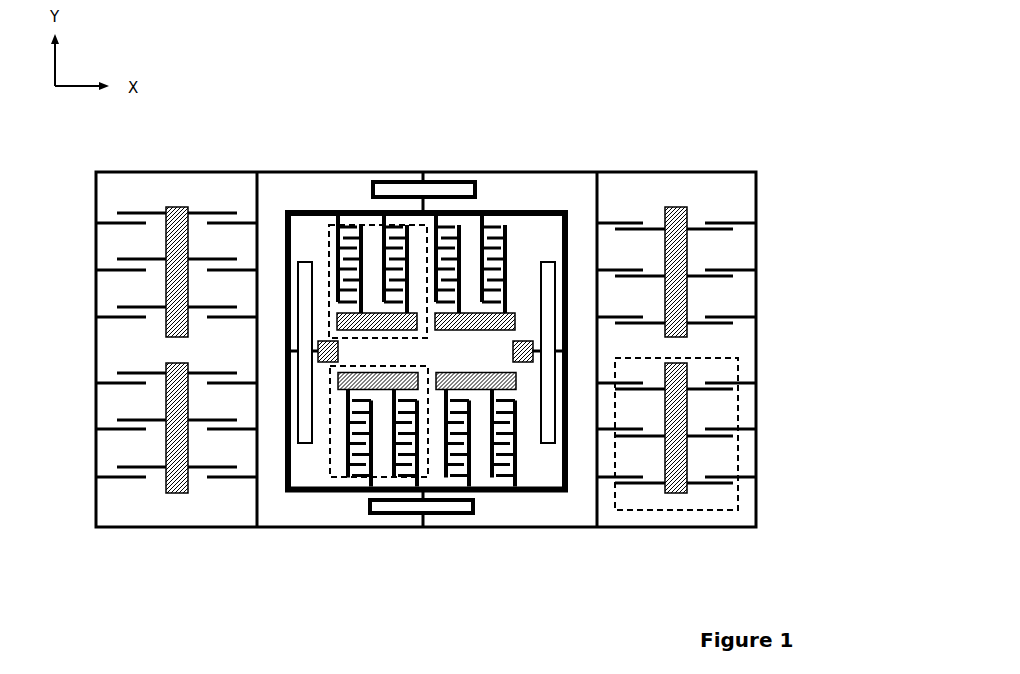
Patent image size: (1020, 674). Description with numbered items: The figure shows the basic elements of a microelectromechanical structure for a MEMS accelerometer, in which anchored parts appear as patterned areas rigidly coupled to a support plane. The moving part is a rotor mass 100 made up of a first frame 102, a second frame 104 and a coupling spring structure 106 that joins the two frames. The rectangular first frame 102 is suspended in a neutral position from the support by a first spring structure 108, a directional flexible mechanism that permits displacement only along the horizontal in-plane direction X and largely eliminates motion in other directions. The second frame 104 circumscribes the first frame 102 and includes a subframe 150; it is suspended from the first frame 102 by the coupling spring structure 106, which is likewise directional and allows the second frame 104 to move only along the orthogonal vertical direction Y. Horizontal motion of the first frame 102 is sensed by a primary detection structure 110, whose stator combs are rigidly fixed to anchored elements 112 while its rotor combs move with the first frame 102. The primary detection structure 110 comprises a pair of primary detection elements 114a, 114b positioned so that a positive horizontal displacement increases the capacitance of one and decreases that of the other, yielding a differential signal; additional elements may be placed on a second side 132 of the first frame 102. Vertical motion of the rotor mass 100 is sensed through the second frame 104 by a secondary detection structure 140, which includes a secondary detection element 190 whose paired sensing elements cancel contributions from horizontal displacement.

The rotor mass 100 is at (567, 527).
The first frame 102 is at (537, 493).
The second frame 104 is at (302, 527).
The coupling spring structure 106 is at (424, 182).
The first spring structure 108 is at (301, 262).
The primary detection structure 110 is at (483, 216).
The anchored elements 112 is at (428, 300).
The primary detection element 114a is at (345, 224).
The primary detection element 114b is at (371, 512).
The second side 132 is at (492, 493).
The secondary detection structure 140 is at (740, 308).
The subframe 150 is at (758, 250).
The secondary detection element 190 is at (738, 420).